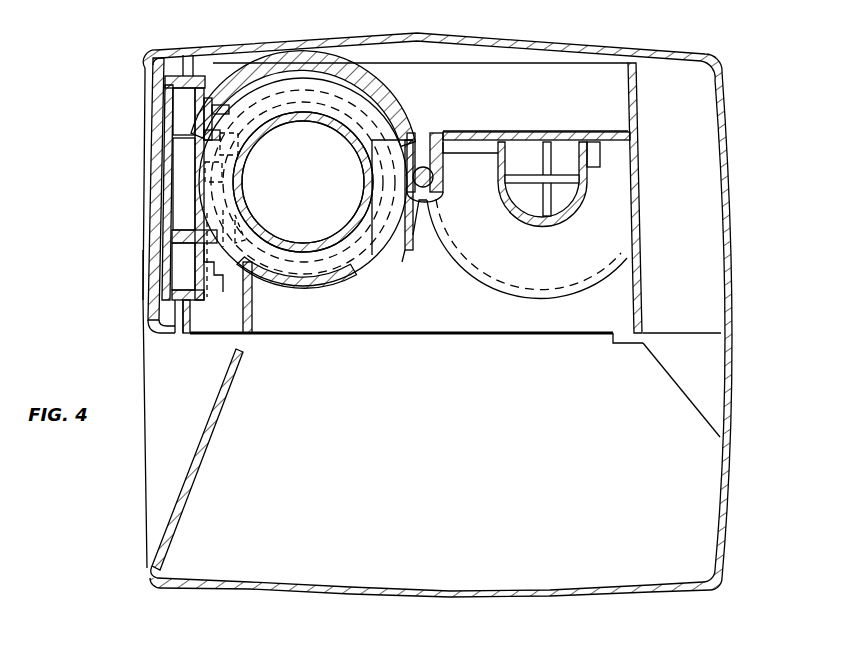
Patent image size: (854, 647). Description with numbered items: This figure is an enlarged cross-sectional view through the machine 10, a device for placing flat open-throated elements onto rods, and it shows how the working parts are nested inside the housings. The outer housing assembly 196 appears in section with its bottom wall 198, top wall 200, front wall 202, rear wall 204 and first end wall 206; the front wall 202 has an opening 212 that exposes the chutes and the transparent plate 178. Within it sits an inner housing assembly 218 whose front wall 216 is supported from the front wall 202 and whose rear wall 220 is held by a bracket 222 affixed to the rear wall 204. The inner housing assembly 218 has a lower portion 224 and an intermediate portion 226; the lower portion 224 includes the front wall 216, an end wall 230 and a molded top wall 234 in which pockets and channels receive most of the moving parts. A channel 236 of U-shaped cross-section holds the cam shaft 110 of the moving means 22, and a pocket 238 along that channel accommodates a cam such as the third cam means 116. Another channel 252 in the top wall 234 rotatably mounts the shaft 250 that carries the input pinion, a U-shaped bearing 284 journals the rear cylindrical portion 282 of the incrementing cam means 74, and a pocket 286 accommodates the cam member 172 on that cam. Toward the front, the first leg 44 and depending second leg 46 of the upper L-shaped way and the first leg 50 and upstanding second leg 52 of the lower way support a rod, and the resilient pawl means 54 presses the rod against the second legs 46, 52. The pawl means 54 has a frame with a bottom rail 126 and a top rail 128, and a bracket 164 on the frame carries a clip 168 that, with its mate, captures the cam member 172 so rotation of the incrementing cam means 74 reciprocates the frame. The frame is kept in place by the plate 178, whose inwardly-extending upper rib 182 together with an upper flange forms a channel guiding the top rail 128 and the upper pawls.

The machine 10 is at (755, 226).
The moving means 22 is at (508, 224).
The first leg 44 is at (231, 130).
The second leg 46 is at (223, 136).
The first leg 50 is at (210, 265).
The second leg 52 is at (210, 266).
The resilient pawl means 54 is at (194, 322).
The incrementing cam means 74 is at (320, 262).
The cam shaft 110 is at (561, 197).
The third cam means 116 is at (500, 287).
The bottom rail 126 is at (172, 300).
The top rail 128 is at (186, 84).
The bracket 164 is at (195, 182).
The clip 168 is at (250, 154).
The cam member 172 is at (222, 204).
The plate 178 is at (156, 254).
The upper rib 182 is at (195, 141).
The outer housing assembly 196 is at (740, 505).
The bottom wall 198 is at (626, 593).
The top wall 200 is at (630, 52).
The front wall 202 is at (176, 507).
The rear wall 204 is at (733, 380).
The first end wall 206 is at (584, 494).
The opening 212 is at (152, 442).
The front wall 216 is at (182, 333).
The inner housing assembly 218 is at (376, 344).
The rear wall 220 is at (641, 330).
The bracket 222 is at (696, 384).
The lower portion 224 is at (550, 326).
The intermediate portion 226 is at (628, 86).
The end wall 230 is at (420, 295).
The top wall 234 is at (612, 138).
The channel 236 is at (574, 163).
The pocket 238 is at (470, 260).
The shaft 250 is at (413, 235).
The channel 252 is at (433, 134).
The rear cylindrical portion 282 is at (342, 124).
The U-shaped bearing 284 is at (292, 249).
The pocket 286 is at (352, 262).